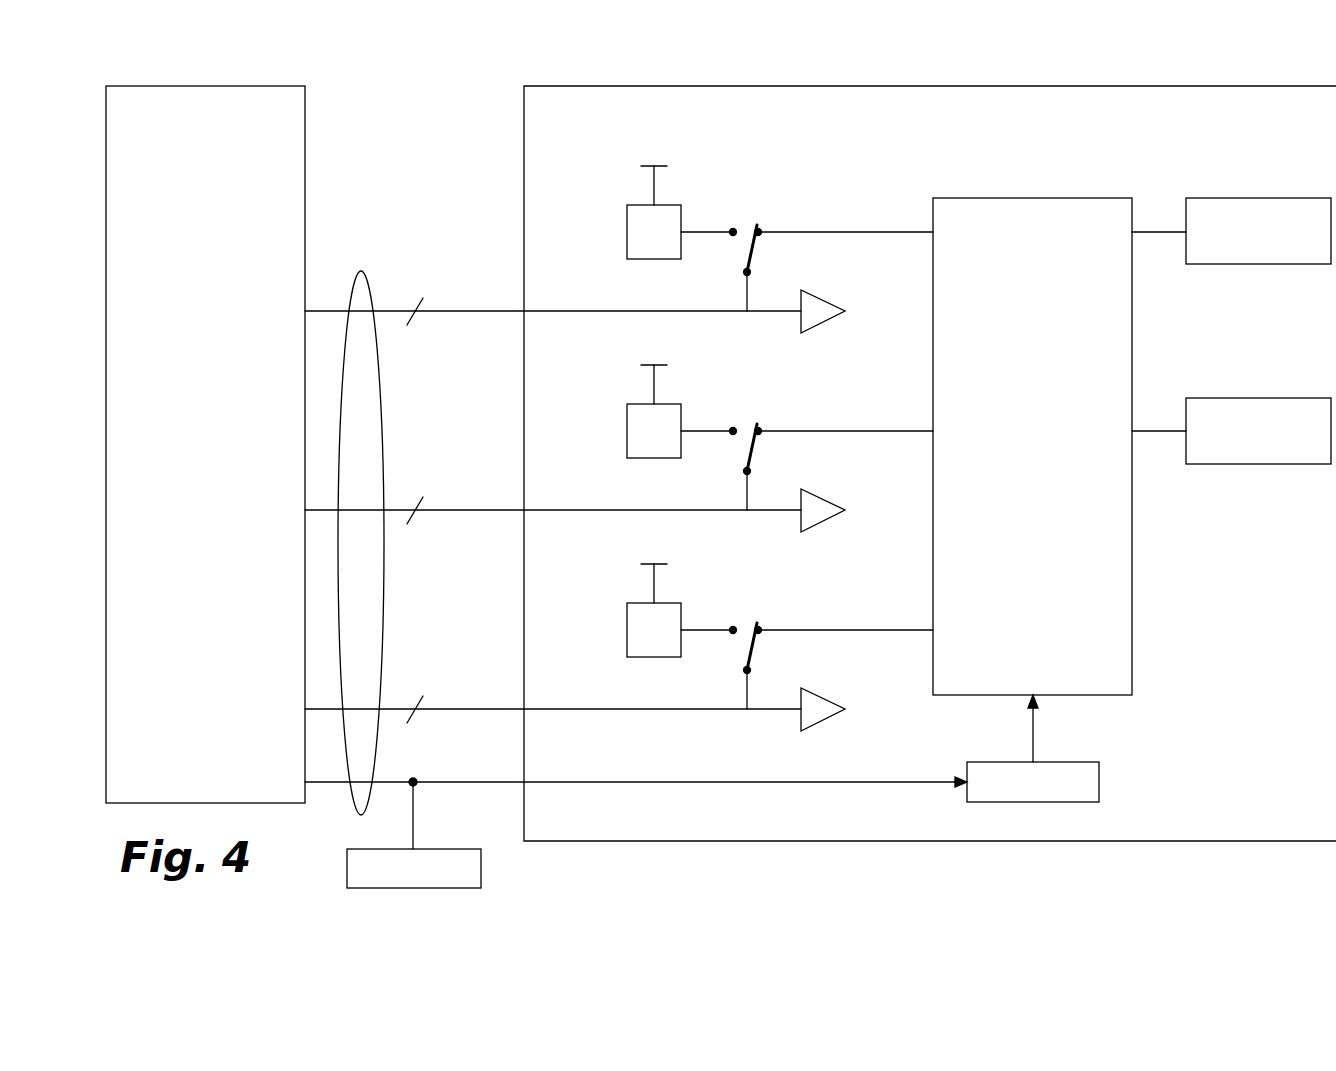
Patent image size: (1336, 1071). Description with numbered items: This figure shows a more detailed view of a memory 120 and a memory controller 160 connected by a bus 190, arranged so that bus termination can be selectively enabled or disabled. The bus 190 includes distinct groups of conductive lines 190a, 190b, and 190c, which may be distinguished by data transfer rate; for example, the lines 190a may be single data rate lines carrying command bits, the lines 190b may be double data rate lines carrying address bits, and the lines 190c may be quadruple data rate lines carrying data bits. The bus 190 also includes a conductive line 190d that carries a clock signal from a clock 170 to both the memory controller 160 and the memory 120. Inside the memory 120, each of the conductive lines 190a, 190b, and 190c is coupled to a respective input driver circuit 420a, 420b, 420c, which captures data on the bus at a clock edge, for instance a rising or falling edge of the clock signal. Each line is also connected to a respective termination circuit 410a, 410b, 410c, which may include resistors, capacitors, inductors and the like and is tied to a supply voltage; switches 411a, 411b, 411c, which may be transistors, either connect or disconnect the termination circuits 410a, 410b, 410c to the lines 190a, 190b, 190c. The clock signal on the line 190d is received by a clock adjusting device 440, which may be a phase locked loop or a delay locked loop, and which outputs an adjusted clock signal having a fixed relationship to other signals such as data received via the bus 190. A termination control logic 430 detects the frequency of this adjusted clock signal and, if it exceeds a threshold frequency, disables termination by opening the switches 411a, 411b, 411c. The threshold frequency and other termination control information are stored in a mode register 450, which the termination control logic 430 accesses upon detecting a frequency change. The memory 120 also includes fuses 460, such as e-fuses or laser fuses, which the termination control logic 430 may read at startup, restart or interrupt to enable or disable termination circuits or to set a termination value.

The memory 120 is at (1260, 86).
The memory controller 160 is at (232, 86).
The clock 170 is at (481, 868).
The bus 190 is at (360, 270).
The conductive lines 190a is at (448, 310).
The conductive lines 190b is at (448, 509).
The conductive lines 190c is at (448, 708).
The conductive line 190d is at (448, 781).
The termination circuit 410a is at (627, 232).
The termination circuit 410b is at (627, 431).
The termination circuit 410c is at (627, 630).
The switch 411a is at (752, 252).
The switch 411b is at (752, 451).
The switch 411c is at (752, 650).
The input driver circuit 420a is at (815, 327).
The input driver circuit 420b is at (815, 526).
The input driver circuit 420c is at (815, 725).
The termination control logic 430 is at (1055, 197).
The clock adjusting device 440 is at (1099, 778).
The mode register 450 is at (1245, 197).
The fuses 460 is at (1245, 397).